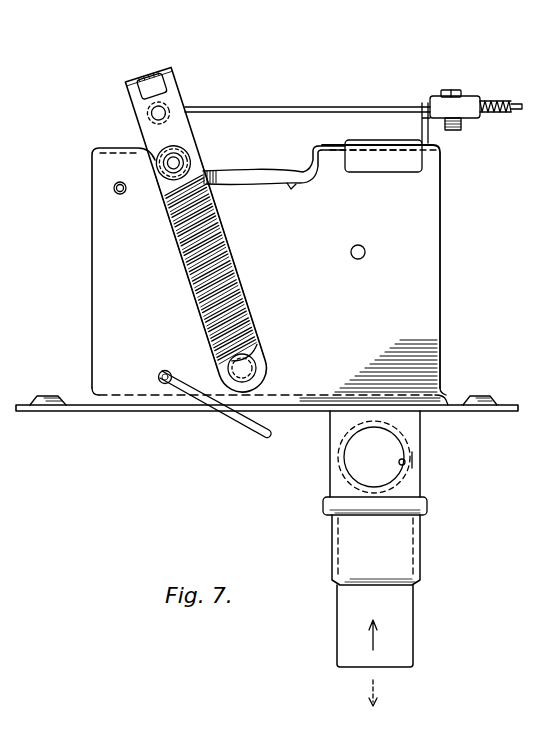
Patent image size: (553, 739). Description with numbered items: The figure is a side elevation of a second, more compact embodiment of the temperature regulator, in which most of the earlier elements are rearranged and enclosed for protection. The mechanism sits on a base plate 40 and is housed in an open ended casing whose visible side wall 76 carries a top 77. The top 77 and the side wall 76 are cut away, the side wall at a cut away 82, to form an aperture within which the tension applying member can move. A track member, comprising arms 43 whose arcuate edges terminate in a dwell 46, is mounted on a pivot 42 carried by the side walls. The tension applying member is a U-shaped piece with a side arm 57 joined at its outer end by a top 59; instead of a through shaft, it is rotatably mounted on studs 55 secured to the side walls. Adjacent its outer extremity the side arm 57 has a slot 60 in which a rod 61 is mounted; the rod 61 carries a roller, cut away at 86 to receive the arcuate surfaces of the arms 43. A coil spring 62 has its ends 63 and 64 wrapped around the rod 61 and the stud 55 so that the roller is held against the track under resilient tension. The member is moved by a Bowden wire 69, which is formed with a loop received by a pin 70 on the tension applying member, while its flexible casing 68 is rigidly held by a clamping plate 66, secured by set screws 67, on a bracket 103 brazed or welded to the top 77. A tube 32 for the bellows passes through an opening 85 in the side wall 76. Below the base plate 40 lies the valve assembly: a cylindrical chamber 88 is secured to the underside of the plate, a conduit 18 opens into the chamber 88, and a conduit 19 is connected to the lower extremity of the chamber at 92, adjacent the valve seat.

The conduit 18 is at (412, 459).
The conduit 19 is at (416, 619).
The tube 32 is at (238, 421).
The base plate 40 is at (84, 412).
The pivot pin 42 is at (113, 186).
The arms 43 is at (314, 160).
The dwell 46 is at (303, 181).
The studs 55 is at (253, 363).
The side arm 57 is at (236, 262).
The top 59 is at (151, 86).
The slots 60 is at (172, 173).
The rod 61 is at (172, 168).
The coil springs 62 is at (226, 232).
The spring end 63 is at (208, 176).
The spring end 64 is at (258, 352).
The clamping plate 66 is at (479, 97).
The set screws 67 is at (450, 90).
The flexible casing 68 is at (506, 104).
The wire 69 is at (323, 108).
The pin 70 is at (165, 108).
The side wall 76 is at (96, 334).
The top 77 is at (346, 147).
The cut away 82 is at (293, 187).
The opening 85 is at (162, 371).
The cut away 86 is at (186, 150).
The cylindrical chamber 88 is at (330, 471).
The connection 92 is at (428, 504).
The bracket 103 is at (448, 131).